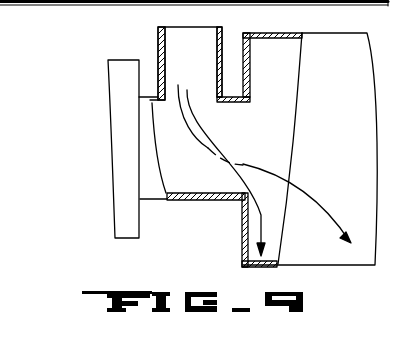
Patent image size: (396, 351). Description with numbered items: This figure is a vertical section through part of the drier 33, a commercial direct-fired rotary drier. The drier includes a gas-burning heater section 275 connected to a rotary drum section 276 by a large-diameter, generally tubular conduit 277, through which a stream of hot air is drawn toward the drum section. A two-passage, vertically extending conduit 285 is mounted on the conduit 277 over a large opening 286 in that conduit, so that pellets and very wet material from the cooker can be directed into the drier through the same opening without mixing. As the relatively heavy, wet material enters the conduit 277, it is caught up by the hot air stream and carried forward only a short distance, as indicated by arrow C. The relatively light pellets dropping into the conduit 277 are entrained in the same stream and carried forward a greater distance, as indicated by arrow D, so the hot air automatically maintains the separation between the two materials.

The drier 33 is at (296, 262).
The gas-burning heater section 275 is at (127, 173).
The rotary drum section 276 is at (352, 176).
The tubular conduit 277 is at (186, 200).
The two-passage vertically extending conduit 285 is at (158, 43).
The opening 286 is at (212, 103).
The arrow C is at (248, 217).
The arrow D is at (267, 172).